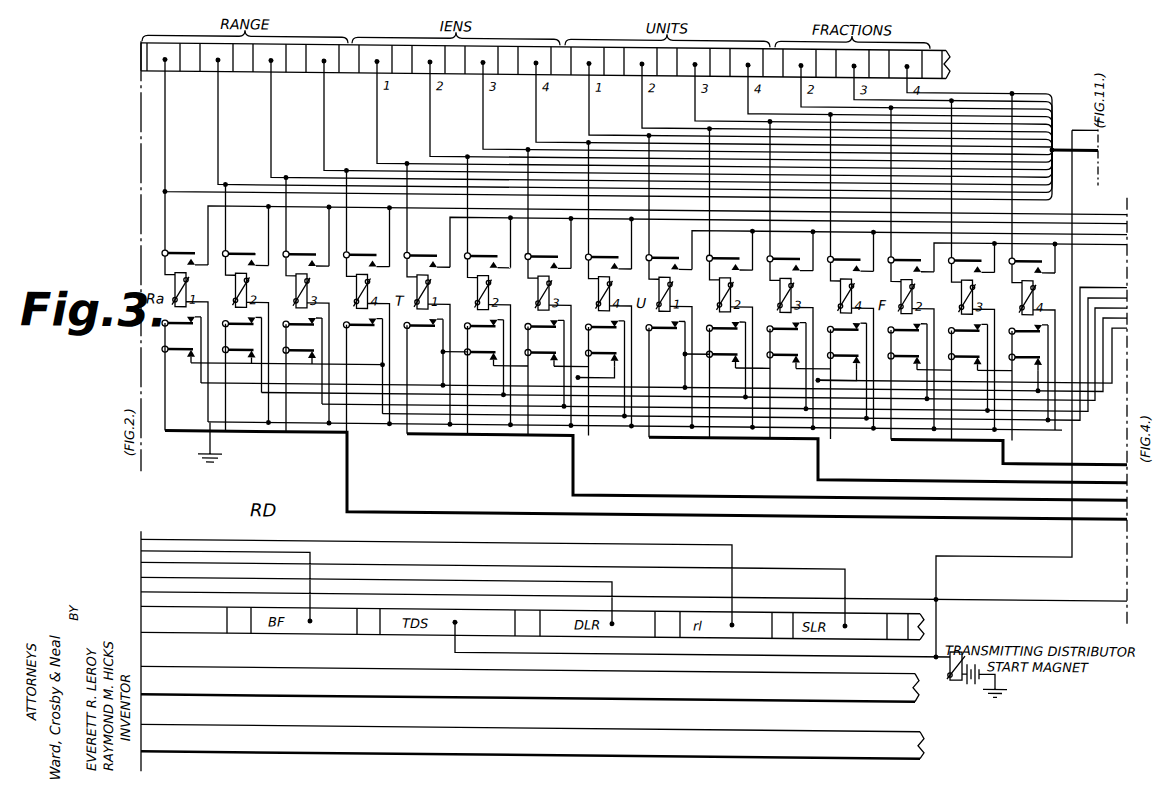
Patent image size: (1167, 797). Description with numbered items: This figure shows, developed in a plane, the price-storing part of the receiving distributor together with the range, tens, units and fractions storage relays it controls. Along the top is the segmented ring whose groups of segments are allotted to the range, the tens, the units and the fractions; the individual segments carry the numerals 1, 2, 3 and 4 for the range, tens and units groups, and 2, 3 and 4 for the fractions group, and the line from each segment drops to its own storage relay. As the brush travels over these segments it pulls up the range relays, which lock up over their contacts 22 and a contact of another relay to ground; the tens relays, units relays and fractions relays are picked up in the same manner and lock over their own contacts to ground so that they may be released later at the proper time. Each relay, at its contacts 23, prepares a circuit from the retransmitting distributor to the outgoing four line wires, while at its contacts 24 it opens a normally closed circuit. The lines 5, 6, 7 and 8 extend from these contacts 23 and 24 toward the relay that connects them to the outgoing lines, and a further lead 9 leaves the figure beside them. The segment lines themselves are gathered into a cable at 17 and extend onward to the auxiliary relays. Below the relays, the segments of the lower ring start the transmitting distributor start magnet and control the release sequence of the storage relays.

The range, tens and units segment line 1 is at (608, 129).
The range, tens, units and fractions segment line 2 is at (634, 126).
The range, tens, units and fractions segment line 3 is at (661, 122).
The range, tens, units and fractions segment line 4 is at (687, 119).
The line to range and price relay contacts 5 is at (760, 347).
The line to range and price relay contacts 6 is at (729, 348).
The line to range and price relay contacts 7 is at (699, 346).
The line to range and price relay contacts 8 is at (669, 347).
The lead to Fig. 4 9 is at (977, 351).
The cable 17 is at (1074, 151).
The locking contacts 22 is at (608, 254).
The circuit-preparing contacts 23 is at (606, 366).
The normally closed contacts 24 is at (602, 365).